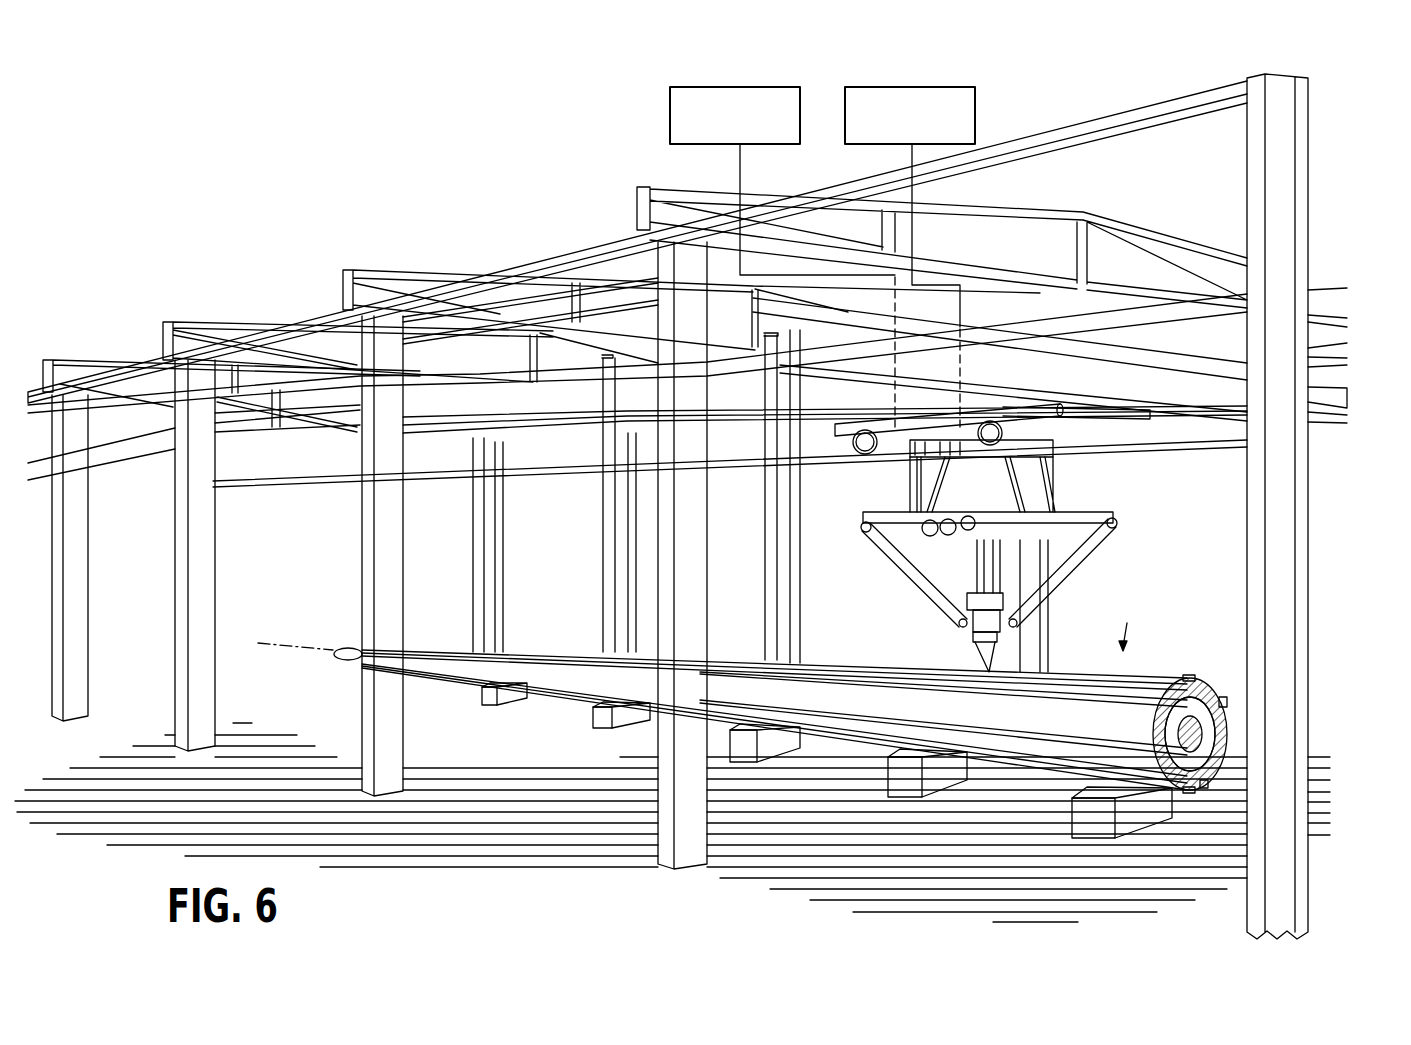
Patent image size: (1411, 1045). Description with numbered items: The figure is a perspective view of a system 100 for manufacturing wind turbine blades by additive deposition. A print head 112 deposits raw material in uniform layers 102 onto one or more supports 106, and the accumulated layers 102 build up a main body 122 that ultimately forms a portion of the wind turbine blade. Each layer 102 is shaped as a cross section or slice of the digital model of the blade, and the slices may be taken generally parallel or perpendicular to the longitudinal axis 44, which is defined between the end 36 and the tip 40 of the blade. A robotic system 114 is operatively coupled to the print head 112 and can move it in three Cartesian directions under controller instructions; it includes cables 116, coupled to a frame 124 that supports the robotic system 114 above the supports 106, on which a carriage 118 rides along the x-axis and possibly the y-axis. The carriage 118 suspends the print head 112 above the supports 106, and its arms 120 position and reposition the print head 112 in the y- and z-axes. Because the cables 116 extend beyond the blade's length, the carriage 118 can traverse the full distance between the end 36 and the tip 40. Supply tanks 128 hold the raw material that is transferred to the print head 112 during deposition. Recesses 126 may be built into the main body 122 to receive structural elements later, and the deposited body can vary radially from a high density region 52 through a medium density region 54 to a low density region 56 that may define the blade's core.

The system 100 is at (183, 172).
The end 36 is at (1232, 745).
The tip 40 is at (352, 650).
The longitudinal axis 44 is at (287, 650).
The high density region 52 is at (1198, 678).
The medium density region 54 is at (1222, 760).
The low density region 56 is at (1172, 733).
The layer 102 is at (1224, 706).
The support 106 is at (602, 718).
The print head 112 is at (993, 656).
The robotic system 114 is at (1117, 512).
The cables 116 is at (1317, 405).
The carriage 118 is at (1043, 400).
The arms 120 is at (902, 573).
The main body 122 is at (1142, 625).
The frame 124 is at (1303, 219).
The recesses 126 is at (1183, 792).
The supply tanks 128 is at (740, 87).